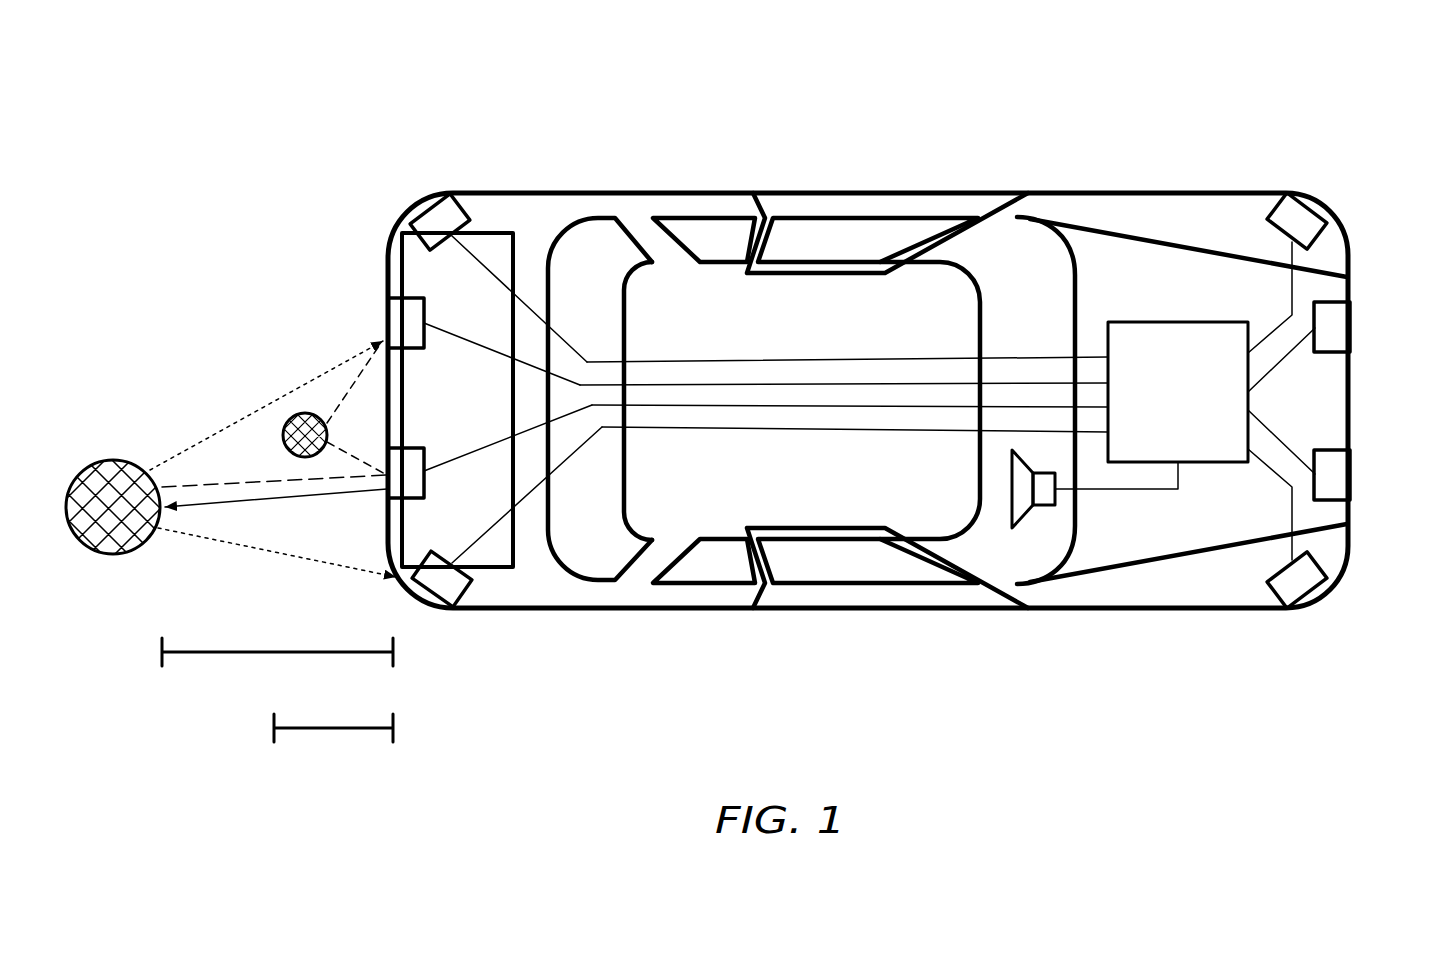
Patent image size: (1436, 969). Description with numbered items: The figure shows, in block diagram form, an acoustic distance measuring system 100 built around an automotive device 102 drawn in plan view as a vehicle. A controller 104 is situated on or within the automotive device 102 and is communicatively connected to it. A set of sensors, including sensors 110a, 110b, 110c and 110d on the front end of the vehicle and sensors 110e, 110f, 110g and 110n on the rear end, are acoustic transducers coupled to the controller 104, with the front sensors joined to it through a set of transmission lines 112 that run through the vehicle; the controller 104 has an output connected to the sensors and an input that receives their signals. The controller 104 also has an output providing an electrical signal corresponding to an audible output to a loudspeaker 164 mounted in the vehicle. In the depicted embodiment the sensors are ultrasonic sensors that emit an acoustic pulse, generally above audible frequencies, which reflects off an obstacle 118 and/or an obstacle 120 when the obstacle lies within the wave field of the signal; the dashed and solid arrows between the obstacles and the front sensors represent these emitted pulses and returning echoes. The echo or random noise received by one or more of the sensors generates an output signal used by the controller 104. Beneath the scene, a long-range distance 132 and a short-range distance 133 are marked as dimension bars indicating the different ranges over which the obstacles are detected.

The acoustic distance measuring system 100 is at (1200, 108).
The automotive device 102 is at (542, 208).
The controller 104 is at (1159, 429).
The sensor 110a is at (442, 218).
The sensor 110b is at (398, 313).
The sensor 110c is at (388, 498).
The sensor 110d is at (452, 603).
The sensor 110e is at (1293, 220).
The sensor 110f is at (1340, 330).
The sensor 110g is at (1340, 475).
The sensor 110n is at (1325, 582).
The set of transmission lines 112 is at (722, 358).
The obstacle 118 is at (285, 440).
The obstacle 120 is at (112, 470).
The long-range distance 132 is at (295, 654).
The short-range distance 133 is at (330, 730).
The loudspeaker 164 is at (1045, 500).